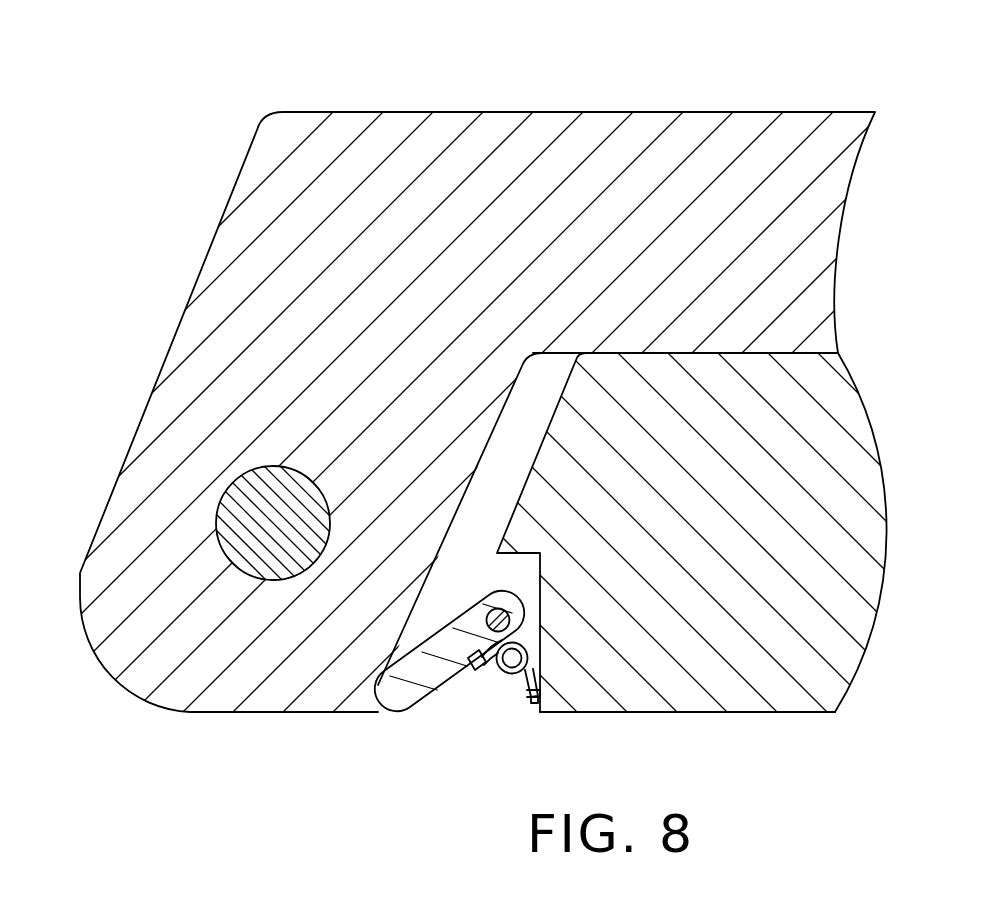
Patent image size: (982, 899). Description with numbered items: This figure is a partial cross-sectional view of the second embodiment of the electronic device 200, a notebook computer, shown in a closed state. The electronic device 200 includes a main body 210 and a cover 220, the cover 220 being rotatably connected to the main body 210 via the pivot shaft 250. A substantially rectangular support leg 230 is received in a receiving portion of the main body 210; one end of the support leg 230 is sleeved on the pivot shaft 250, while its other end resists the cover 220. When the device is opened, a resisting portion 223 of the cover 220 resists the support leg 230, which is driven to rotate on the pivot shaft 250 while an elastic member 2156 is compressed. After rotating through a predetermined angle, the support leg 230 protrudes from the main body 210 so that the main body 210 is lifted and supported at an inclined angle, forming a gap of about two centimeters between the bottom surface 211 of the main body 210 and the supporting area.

The electronic device 200 is at (587, 43).
The cover 220 is at (667, 152).
The main body 210 is at (793, 399).
The bottom surface 211 is at (703, 712).
The resisting portion 223 is at (318, 650).
The support leg 230 is at (407, 688).
The pivot shaft 250 is at (517, 612).
The elastic member 2156 is at (530, 680).